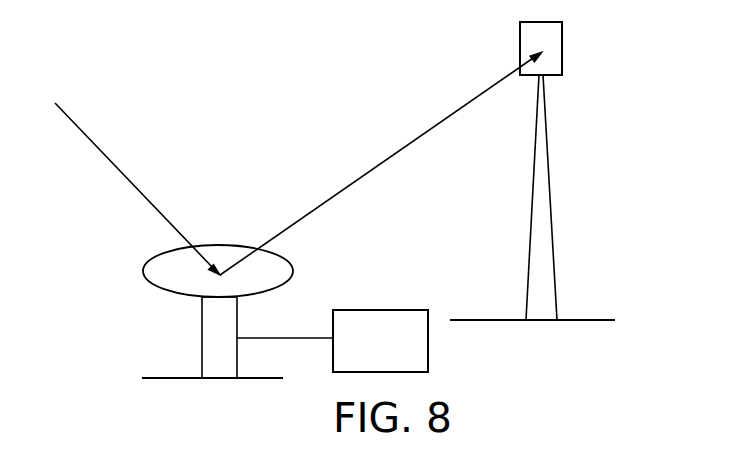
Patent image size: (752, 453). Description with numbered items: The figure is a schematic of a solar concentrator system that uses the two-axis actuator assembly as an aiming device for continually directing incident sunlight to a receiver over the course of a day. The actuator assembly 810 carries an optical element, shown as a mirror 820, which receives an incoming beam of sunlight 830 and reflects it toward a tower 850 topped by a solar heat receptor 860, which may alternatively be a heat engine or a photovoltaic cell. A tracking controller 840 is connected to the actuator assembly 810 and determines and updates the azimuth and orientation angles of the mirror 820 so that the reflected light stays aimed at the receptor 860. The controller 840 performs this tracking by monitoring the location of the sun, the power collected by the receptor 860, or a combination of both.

The actuator assembly 810 is at (202, 348).
The mirror 820 is at (148, 262).
The incident light beam 830 is at (102, 151).
The tracking controller 840 is at (380, 341).
The tower 850 is at (550, 243).
The solar heat receptor 860 is at (562, 50).